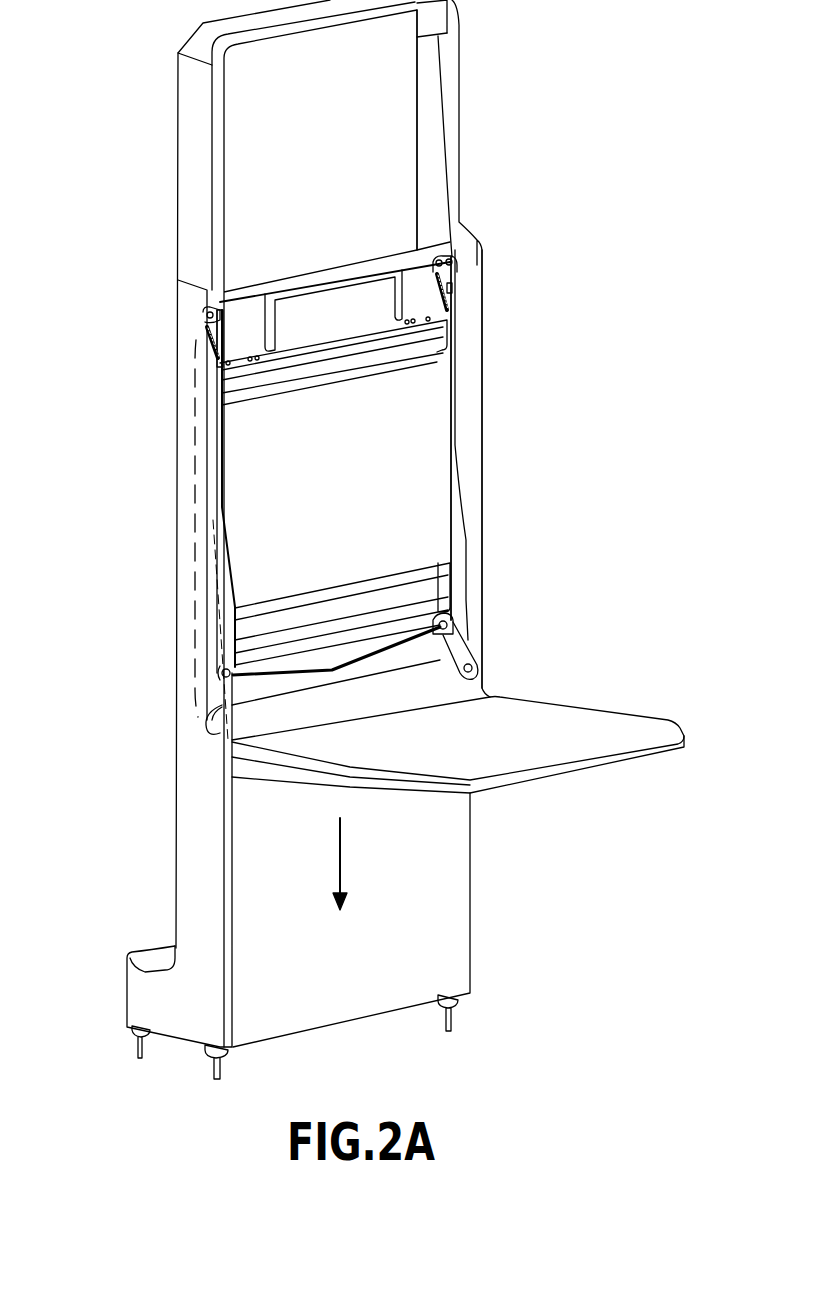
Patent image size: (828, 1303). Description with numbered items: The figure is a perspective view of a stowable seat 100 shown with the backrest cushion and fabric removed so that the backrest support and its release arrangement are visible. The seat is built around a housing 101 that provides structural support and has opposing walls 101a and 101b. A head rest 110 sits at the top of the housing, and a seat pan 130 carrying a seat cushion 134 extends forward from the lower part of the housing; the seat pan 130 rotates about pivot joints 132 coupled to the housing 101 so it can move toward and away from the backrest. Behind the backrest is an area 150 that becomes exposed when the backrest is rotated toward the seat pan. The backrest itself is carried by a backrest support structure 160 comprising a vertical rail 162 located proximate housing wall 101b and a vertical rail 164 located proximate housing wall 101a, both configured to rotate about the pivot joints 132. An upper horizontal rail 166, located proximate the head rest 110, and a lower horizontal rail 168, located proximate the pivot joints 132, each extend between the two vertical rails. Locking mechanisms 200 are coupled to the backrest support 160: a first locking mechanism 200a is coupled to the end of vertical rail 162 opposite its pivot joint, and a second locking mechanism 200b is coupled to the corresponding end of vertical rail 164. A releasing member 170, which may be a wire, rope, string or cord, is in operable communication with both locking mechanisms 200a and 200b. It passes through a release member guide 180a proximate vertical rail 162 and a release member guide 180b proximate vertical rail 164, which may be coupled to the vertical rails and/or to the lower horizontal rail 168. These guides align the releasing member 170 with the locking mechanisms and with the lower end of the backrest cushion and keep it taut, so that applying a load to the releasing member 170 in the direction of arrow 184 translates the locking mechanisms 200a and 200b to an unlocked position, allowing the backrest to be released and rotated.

The stowable seat 100 is at (371, 539).
The housing 101 is at (321, 539).
The housing wall 101a is at (192, 845).
The housing wall 101b is at (465, 317).
The head rest 110 is at (346, 134).
The seat pan 130 is at (458, 724).
The pivot joint 132 is at (477, 670).
The seat cushion 134 is at (534, 742).
The area 150 is at (340, 490).
The backrest support structure 160 is at (335, 422).
The vertical rail 162 is at (440, 427).
The vertical rail 164 is at (191, 446).
The upper horizontal rail 166 is at (336, 310).
The lower horizontal rail 168 is at (366, 608).
The releasing member 170 is at (357, 662).
The release member guide 180a is at (450, 628).
The release member guide 180b is at (233, 677).
The arrow 184 is at (342, 832).
The locking mechanism 200 is at (324, 285).
The first locking mechanism 200a is at (461, 268).
The second locking mechanism 200b is at (200, 328).